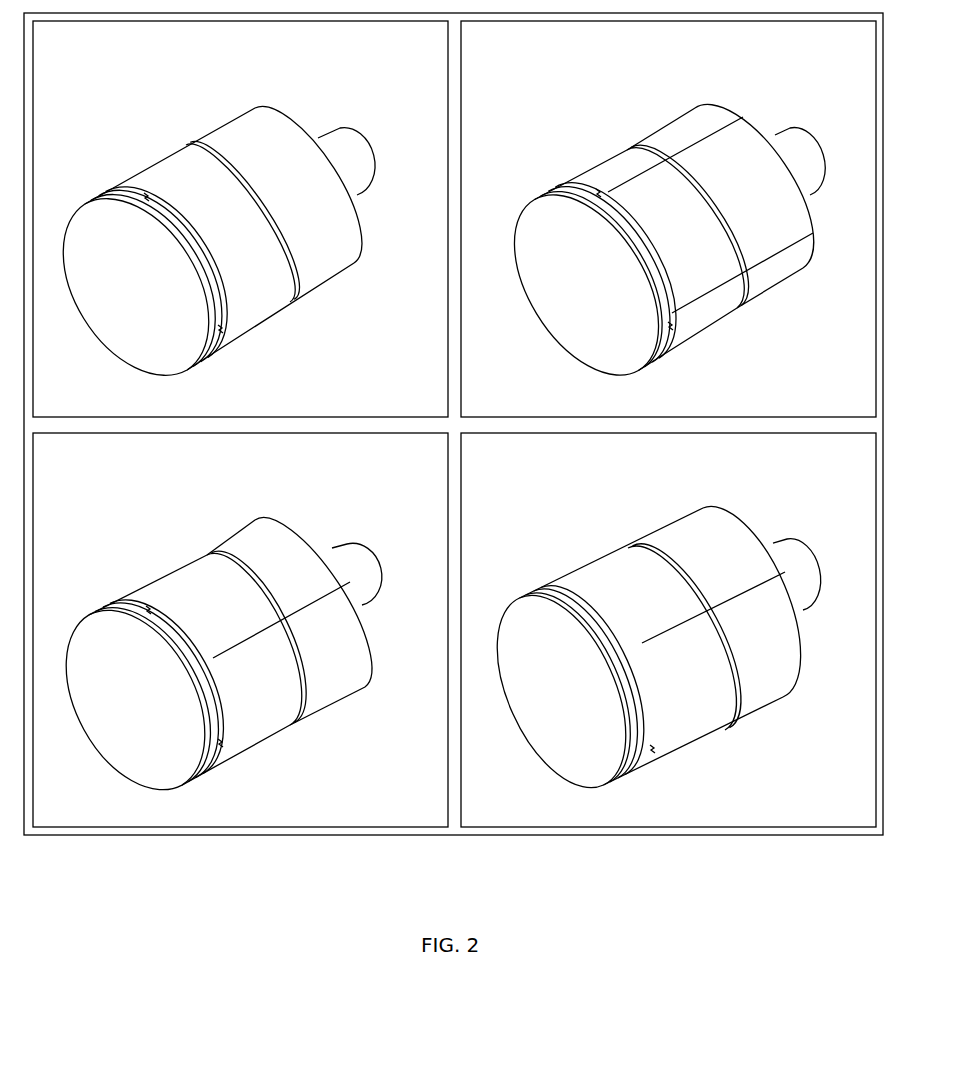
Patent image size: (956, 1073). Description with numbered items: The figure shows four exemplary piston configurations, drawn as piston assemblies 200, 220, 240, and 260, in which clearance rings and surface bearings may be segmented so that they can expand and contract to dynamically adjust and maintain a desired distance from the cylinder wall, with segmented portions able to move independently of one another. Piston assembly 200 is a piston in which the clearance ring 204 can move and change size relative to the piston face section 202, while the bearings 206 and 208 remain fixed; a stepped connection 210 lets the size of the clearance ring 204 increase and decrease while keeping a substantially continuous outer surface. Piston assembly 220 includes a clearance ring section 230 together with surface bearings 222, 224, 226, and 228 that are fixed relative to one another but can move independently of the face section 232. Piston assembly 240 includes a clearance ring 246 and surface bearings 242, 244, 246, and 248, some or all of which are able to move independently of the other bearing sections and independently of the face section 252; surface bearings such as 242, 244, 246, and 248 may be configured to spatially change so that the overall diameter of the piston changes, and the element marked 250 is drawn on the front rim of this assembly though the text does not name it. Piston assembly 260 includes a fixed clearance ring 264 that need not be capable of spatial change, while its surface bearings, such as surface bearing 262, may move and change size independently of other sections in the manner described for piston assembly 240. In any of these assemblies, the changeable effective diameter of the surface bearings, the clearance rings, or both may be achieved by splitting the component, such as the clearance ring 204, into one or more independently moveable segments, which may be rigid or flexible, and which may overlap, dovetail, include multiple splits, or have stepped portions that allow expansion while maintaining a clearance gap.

The piston assembly 200 is at (211, 48).
The piston face section 202 is at (158, 338).
The clearance ring 204 is at (220, 330).
The bearing 206 is at (250, 296).
The bearing 208 is at (318, 258).
The stepped connection 210 is at (147, 197).
The piston assembly 220 is at (688, 52).
The surface bearing 222 is at (617, 162).
The surface bearing 224 is at (682, 132).
The surface bearing 226 is at (692, 250).
The surface bearing 228 is at (762, 218).
The clearance ring section 230 is at (668, 327).
The face section 232 is at (583, 338).
The piston assembly 240 is at (270, 464).
The surface bearing 242 is at (163, 578).
The surface bearing 244 is at (237, 543).
The clearance ring 246 is at (250, 705).
The surface bearing 248 is at (313, 670).
The cap rim 250 is at (118, 595).
The face section 252 is at (127, 740).
The piston assembly 260 is at (691, 464).
The surface bearing 262 is at (682, 710).
The fixed clearance ring 264 is at (655, 730).